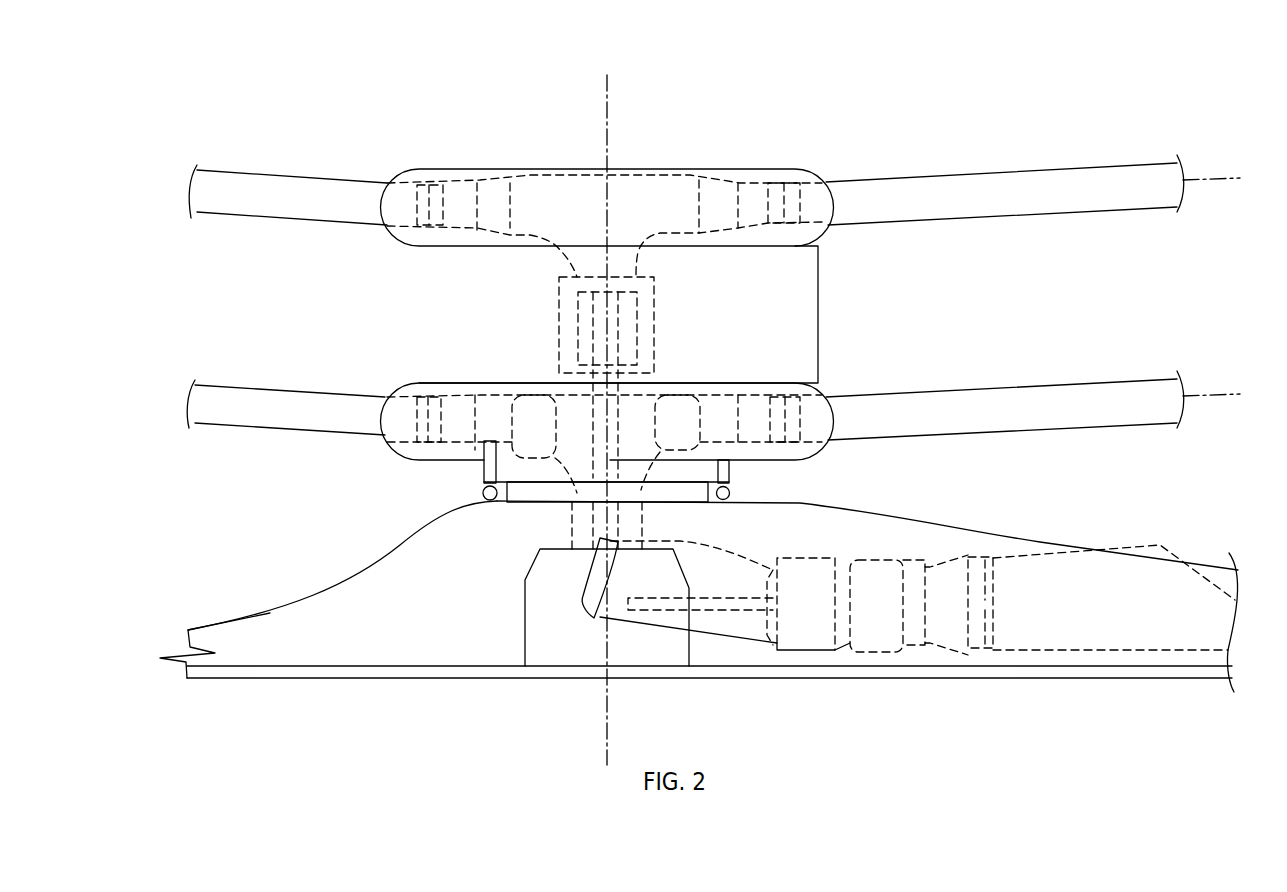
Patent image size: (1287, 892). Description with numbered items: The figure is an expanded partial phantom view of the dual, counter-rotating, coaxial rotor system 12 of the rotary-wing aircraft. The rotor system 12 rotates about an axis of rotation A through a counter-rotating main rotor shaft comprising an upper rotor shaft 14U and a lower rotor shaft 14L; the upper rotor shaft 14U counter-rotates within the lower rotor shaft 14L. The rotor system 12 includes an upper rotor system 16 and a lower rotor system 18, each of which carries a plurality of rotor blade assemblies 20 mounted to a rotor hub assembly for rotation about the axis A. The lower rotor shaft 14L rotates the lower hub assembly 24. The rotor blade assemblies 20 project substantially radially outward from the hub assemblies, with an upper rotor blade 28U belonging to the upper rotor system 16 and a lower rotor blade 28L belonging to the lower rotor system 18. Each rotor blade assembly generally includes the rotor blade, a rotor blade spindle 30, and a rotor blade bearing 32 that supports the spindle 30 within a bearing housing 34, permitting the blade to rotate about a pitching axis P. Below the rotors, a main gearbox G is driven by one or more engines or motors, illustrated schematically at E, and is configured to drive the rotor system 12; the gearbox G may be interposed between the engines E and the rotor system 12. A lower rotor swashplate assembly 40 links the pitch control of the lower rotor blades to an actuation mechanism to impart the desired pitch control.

The dual counter-rotating coaxial rotor system 12 is at (368, 465).
The upper rotor shaft 14U is at (577, 298).
The lower rotor shaft 14L is at (577, 335).
The upper rotor system 16 is at (782, 183).
The lower rotor system 18 is at (782, 369).
The rotor blade assembly 20 is at (1069, 204).
The lower hub assembly 24 is at (733, 470).
The upper rotor blade 28U is at (998, 185).
The lower rotor blade 28L is at (965, 385).
The rotor blade spindle 30 is at (796, 180).
The rotor blade bearing 32 is at (760, 180).
The bearing housing 34 is at (722, 195).
The lower rotor swashplate assembly 40 is at (520, 500).
The axis of rotation A is at (608, 112).
The main gearbox G is at (549, 643).
The engine E is at (803, 633).
The pitching axis P is at (1195, 183).